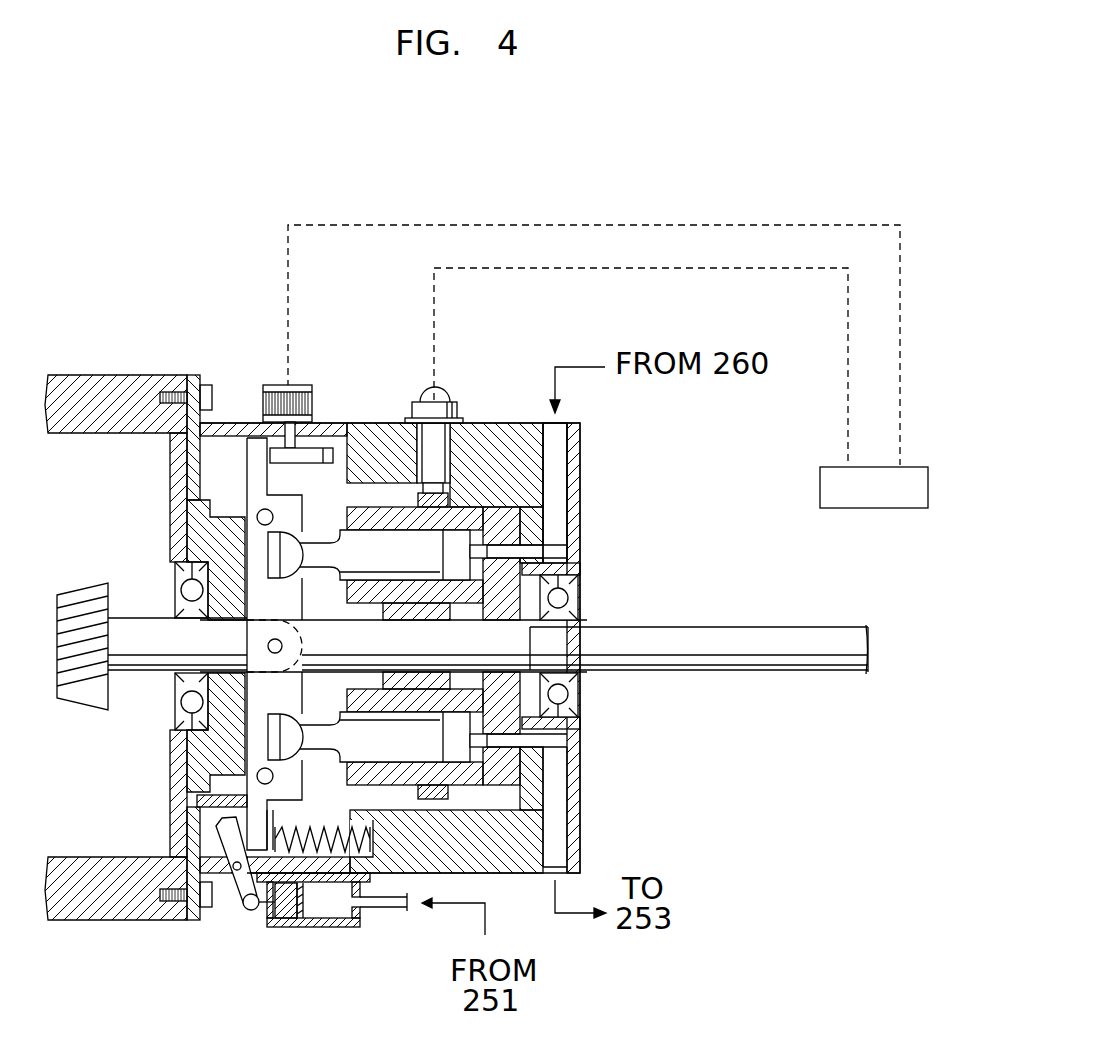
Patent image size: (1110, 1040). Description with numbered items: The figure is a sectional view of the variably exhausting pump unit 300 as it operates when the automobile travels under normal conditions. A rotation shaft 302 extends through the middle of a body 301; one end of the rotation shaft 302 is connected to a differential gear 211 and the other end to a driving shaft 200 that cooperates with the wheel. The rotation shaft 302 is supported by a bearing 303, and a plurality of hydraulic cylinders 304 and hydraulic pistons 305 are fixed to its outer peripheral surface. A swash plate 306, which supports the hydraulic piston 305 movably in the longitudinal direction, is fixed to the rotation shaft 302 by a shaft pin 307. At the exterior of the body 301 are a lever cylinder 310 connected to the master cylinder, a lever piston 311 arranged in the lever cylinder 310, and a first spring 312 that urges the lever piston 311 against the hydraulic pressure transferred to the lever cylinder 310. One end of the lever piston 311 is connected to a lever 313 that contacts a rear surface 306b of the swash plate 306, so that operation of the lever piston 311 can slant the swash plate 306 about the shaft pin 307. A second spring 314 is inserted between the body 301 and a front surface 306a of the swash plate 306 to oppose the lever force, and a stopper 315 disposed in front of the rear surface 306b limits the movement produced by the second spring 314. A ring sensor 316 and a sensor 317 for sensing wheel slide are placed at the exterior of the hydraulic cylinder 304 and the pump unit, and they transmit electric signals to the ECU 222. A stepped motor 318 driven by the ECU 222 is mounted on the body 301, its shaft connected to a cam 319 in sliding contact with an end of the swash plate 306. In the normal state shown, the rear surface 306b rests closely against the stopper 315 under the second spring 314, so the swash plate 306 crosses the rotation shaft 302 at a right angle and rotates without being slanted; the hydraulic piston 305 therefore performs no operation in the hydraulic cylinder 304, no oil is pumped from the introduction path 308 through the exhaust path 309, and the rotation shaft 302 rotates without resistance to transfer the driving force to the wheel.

The driving shaft 200 is at (762, 630).
The differential gear 211 is at (128, 378).
The ECU 222 is at (876, 510).
The variably exhausting pump unit 300 is at (372, 413).
The body 301 is at (527, 492).
The rotation shaft 302 is at (150, 668).
The bearing 303 is at (192, 587).
The hydraulic cylinder 304 is at (452, 552).
The hydraulic piston 305 is at (518, 577).
The swash plate 306 is at (270, 702).
The front surface 306a is at (197, 873).
The rear surface 306b is at (270, 822).
The shaft pin 307 is at (270, 645).
The introduction path 308 is at (555, 450).
The exhaust path 309 is at (555, 813).
The lever cylinder 310 is at (342, 908).
The lever piston 311 is at (303, 903).
The first spring 312 is at (273, 923).
The lever 313 is at (235, 890).
The second spring 314 is at (373, 837).
The stopper 315 is at (247, 813).
The ring sensor 316 is at (457, 497).
The sensor 317 is at (445, 403).
The stepped motor 318 is at (265, 383).
The cam 319 is at (318, 427).